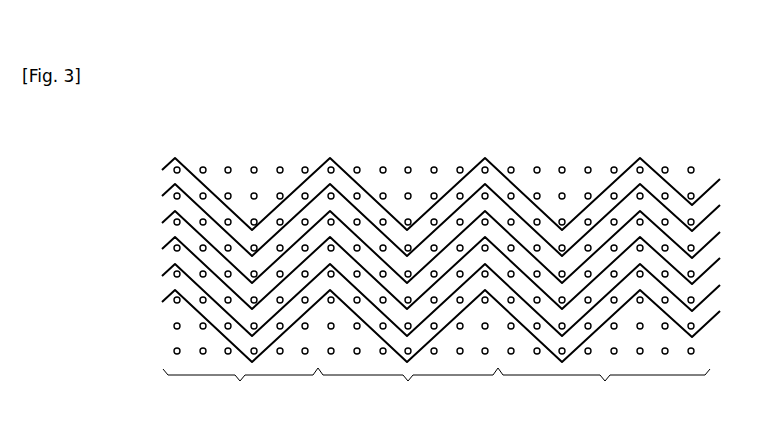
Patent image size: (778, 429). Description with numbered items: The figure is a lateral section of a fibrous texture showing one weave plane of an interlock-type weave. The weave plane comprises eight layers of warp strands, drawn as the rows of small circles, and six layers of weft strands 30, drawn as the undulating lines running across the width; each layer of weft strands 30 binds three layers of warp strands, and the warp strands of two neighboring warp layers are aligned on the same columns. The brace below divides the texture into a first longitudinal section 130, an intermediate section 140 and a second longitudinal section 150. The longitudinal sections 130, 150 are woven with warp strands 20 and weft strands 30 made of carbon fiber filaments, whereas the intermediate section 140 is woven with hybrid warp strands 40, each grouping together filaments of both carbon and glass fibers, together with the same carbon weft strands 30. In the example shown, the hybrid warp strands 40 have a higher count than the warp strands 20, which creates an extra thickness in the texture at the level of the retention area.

The warp strands 20 is at (278, 219).
The weft strands 30 is at (731, 310).
The hybrid warp strands 40 is at (432, 219).
The first longitudinal section 130 is at (240, 382).
The intermediate section 140 is at (408, 382).
The second longitudinal section 150 is at (604, 382).